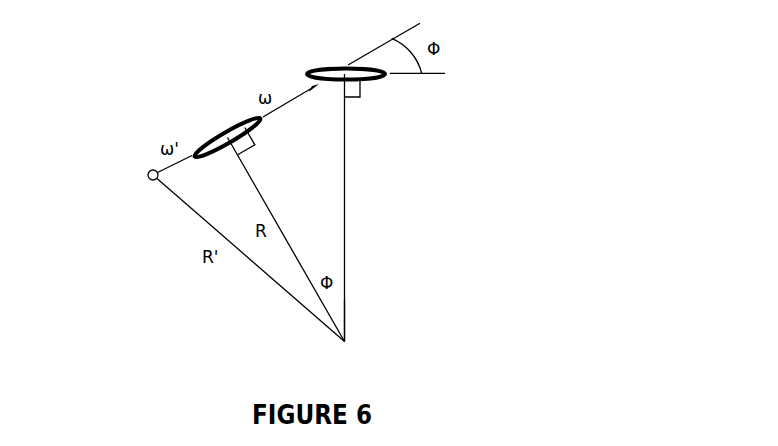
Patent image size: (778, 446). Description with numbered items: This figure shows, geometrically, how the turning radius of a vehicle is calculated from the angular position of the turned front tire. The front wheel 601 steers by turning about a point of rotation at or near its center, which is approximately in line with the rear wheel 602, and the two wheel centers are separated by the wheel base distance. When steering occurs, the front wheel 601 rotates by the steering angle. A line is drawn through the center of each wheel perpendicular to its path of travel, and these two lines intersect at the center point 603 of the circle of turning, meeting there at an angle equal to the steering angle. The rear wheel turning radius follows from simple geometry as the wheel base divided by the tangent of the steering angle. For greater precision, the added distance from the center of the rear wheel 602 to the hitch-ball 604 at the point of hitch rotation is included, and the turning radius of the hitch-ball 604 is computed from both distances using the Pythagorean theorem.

The front wheel 601 is at (318, 63).
The rear wheel 602 is at (207, 137).
The center point of the circle of turning 603 is at (350, 337).
The hitch-ball 604 is at (148, 172).